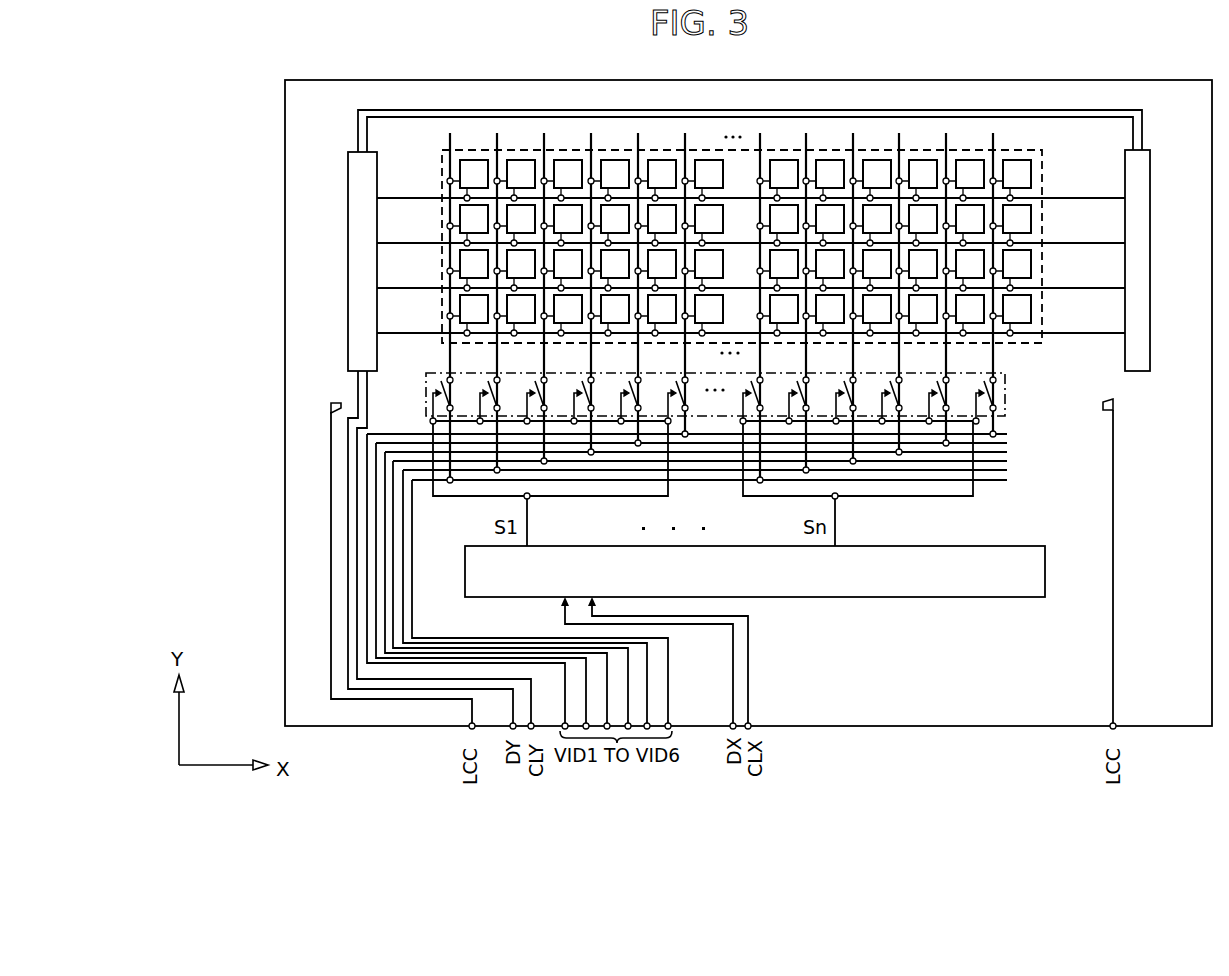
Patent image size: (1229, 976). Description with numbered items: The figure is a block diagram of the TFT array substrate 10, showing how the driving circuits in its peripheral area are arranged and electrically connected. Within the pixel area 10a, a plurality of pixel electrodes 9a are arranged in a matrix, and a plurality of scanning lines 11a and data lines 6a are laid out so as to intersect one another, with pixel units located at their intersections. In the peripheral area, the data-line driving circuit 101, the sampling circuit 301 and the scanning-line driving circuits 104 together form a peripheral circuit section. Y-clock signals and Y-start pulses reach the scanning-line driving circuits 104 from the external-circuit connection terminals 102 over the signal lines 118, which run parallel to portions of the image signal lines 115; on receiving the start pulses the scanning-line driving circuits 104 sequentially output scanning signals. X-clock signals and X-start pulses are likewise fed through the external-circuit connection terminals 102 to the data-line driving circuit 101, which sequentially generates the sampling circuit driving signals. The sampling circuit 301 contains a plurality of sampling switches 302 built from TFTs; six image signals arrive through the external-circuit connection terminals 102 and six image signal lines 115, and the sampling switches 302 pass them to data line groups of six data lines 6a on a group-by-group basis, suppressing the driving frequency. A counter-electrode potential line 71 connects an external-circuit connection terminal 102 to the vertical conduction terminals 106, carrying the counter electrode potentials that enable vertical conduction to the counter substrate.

The TFT array substrate 10 is at (285, 407).
The pixel electrode 9a is at (471, 180).
The pixel area 10a is at (1043, 162).
The scanning-line driving circuit 104 is at (378, 219).
The scanning line 11a is at (417, 333).
The data line 6a is at (452, 360).
The sampling switch 302 is at (999, 388).
The sampling circuit 301 is at (1006, 394).
The vertical conduction terminal 106 is at (334, 403).
The image signal line 115 is at (1012, 428).
The counter-electrode potential line 71 is at (331, 485).
The signal line for the scanning-line driving circuit 118 is at (356, 522).
The data-line driving circuit 101 is at (1000, 546).
The external-circuit connection terminal 102 is at (470, 730).